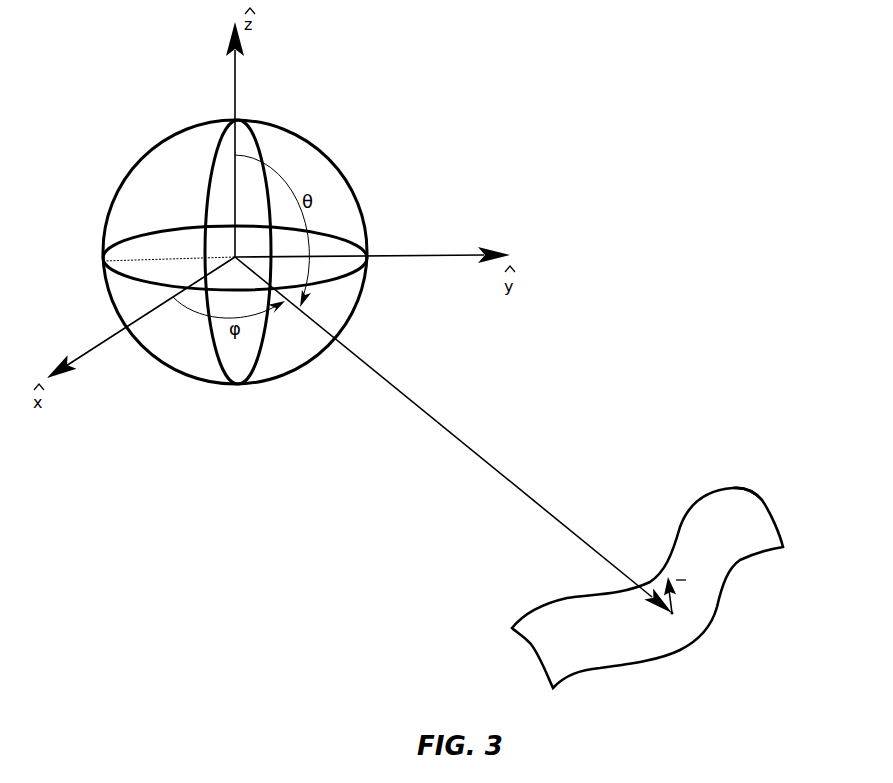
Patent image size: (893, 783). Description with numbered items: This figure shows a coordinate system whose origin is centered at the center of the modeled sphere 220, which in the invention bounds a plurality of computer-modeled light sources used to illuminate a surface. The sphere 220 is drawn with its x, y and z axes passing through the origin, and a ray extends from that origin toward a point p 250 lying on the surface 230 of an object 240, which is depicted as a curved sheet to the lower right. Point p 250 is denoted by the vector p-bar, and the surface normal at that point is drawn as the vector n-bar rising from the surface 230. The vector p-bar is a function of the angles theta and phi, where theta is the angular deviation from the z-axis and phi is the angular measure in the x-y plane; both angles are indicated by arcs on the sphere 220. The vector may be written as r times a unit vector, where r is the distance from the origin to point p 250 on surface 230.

The modeled sphere 220 is at (330, 165).
The surface 230 is at (763, 536).
The object 240 is at (762, 497).
The point p 250 is at (670, 615).